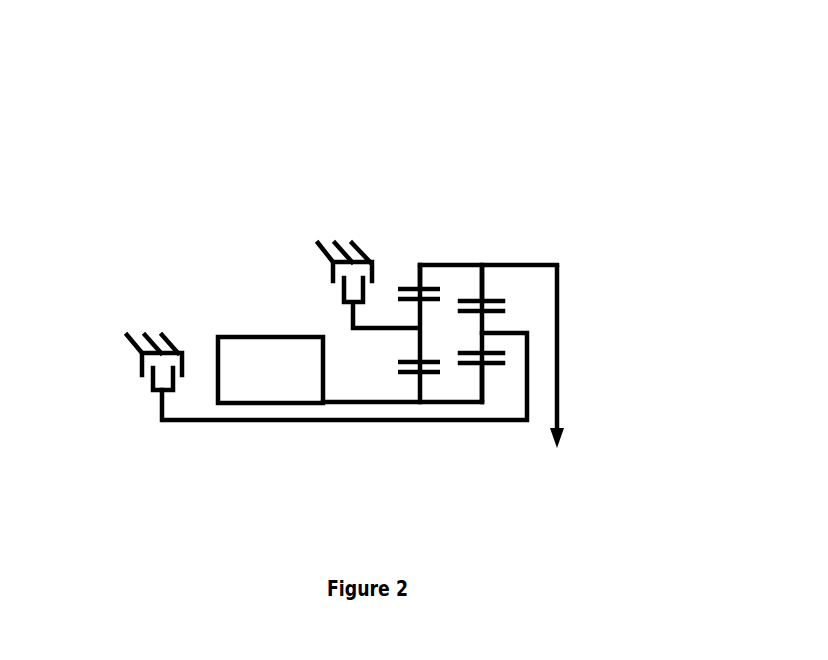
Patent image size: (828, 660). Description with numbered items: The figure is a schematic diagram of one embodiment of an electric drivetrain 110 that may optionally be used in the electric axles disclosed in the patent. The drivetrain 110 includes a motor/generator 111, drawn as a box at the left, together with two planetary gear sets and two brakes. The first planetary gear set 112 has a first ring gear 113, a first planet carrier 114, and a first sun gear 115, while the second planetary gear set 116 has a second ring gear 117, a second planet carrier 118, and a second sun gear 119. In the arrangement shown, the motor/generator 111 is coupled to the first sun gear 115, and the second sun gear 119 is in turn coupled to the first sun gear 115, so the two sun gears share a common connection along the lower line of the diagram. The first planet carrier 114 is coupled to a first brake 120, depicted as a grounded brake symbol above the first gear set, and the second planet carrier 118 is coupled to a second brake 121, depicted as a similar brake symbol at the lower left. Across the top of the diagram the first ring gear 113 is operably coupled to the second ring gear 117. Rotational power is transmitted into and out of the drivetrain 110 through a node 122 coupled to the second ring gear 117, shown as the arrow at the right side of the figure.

The electric drivetrain 110 is at (184, 80).
The motor/generator 111 is at (228, 337).
The first planetary gear set 112 is at (415, 180).
The first ring gear 113 is at (417, 265).
The first planet carrier 114 is at (350, 328).
The first sun gear 115 is at (420, 390).
The second planetary gear set 116 is at (480, 180).
The second ring gear 117 is at (487, 283).
The second planet carrier 118 is at (528, 334).
The second sun gear 119 is at (485, 386).
The first brake 120 is at (333, 261).
The second brake 121 is at (150, 387).
The node 122 is at (558, 263).